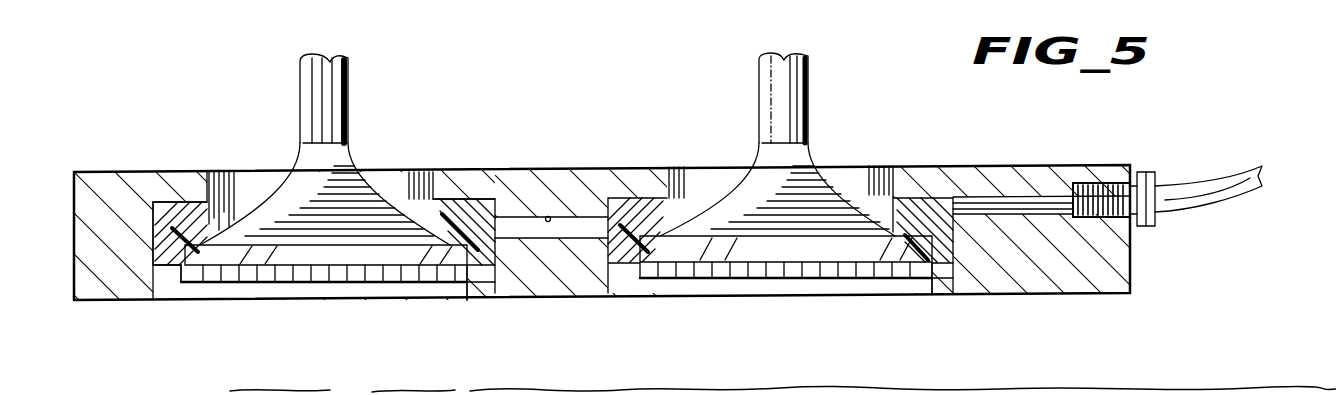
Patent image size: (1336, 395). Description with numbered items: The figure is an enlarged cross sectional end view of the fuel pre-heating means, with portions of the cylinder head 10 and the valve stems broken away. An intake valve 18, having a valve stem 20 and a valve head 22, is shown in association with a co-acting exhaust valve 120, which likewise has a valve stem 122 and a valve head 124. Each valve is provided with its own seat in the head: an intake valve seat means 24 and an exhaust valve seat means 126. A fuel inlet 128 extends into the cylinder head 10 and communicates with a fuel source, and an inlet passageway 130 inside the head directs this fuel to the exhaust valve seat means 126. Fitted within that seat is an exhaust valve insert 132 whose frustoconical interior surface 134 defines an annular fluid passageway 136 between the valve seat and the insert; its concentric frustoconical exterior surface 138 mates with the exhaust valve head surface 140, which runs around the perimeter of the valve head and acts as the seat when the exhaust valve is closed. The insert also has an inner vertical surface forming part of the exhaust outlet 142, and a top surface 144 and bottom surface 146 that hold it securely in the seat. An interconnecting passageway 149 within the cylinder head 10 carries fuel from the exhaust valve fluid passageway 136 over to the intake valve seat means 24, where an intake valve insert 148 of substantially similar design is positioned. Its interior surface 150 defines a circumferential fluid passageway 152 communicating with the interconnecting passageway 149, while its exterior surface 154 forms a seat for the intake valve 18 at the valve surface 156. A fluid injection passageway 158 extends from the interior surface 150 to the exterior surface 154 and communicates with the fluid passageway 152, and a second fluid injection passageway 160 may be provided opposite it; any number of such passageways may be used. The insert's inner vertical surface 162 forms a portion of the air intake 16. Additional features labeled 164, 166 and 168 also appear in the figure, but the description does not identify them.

The cylinder head 10 is at (633, 235).
The air intake 16 is at (445, 222).
The intake valve 18 is at (350, 116).
The valve stem 20 is at (327, 95).
The valve head 22 is at (325, 175).
The intake valve seat means 24 is at (165, 270).
The exhaust valve 120 is at (810, 89).
The valve stem 122 is at (778, 96).
The valve head 124 is at (794, 178).
The exhaust valve seat means 126 is at (956, 290).
The fuel inlet 128 is at (1110, 186).
The inlet passageway 130 is at (1018, 200).
The exhaust valve insert 132 is at (662, 276).
The interior surface 134 is at (928, 232).
The fluid passageway 136 is at (627, 213).
The exterior surface 138 is at (928, 272).
The exhaust valve head surface 140 is at (685, 213).
The exhaust outlet 142 is at (622, 292).
The top surface 144 is at (902, 230).
The bottom surface 146 is at (946, 282).
The intake valve insert 148 is at (476, 288).
The interconnecting passageway 149 is at (549, 213).
The interior surface 150 is at (470, 212).
The circumferential fluid passageway 152 is at (165, 200).
The exterior surface 154 is at (228, 225).
The valve surface 156 is at (326, 253).
The fluid injection passageway 158 is at (484, 296).
The second fluid injection passageway 160 is at (157, 200).
The inner vertical surface 162 is at (430, 213).
The wall 164 is at (530, 290).
The seal wedge 166 is at (203, 215).
The ring 168 is at (182, 280).